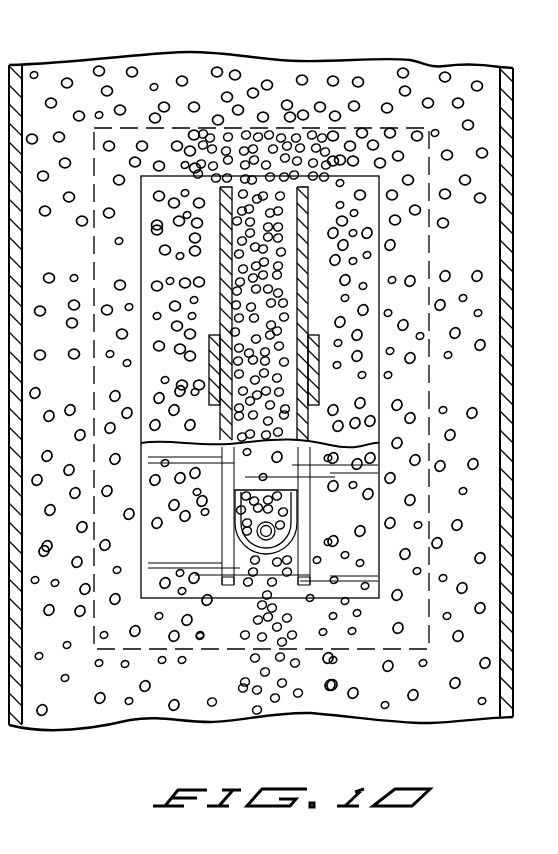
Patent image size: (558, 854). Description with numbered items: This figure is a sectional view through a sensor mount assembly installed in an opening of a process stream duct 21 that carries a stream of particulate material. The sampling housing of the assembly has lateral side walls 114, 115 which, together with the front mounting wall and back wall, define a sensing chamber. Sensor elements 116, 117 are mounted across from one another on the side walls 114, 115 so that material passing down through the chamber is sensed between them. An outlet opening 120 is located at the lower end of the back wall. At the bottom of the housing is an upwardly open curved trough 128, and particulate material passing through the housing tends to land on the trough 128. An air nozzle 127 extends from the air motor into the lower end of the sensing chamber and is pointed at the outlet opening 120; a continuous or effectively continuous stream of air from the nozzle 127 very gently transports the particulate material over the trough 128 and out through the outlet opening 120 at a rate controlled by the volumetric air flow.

The process stream duct 21 is at (510, 101).
The lateral side wall 114 is at (310, 270).
The lateral side wall 115 is at (218, 268).
The sensor element 116 is at (320, 384).
The sensor element 117 is at (209, 371).
The outlet opening 120 is at (243, 527).
The air nozzle 127 is at (293, 530).
The curved trough 128 is at (265, 555).